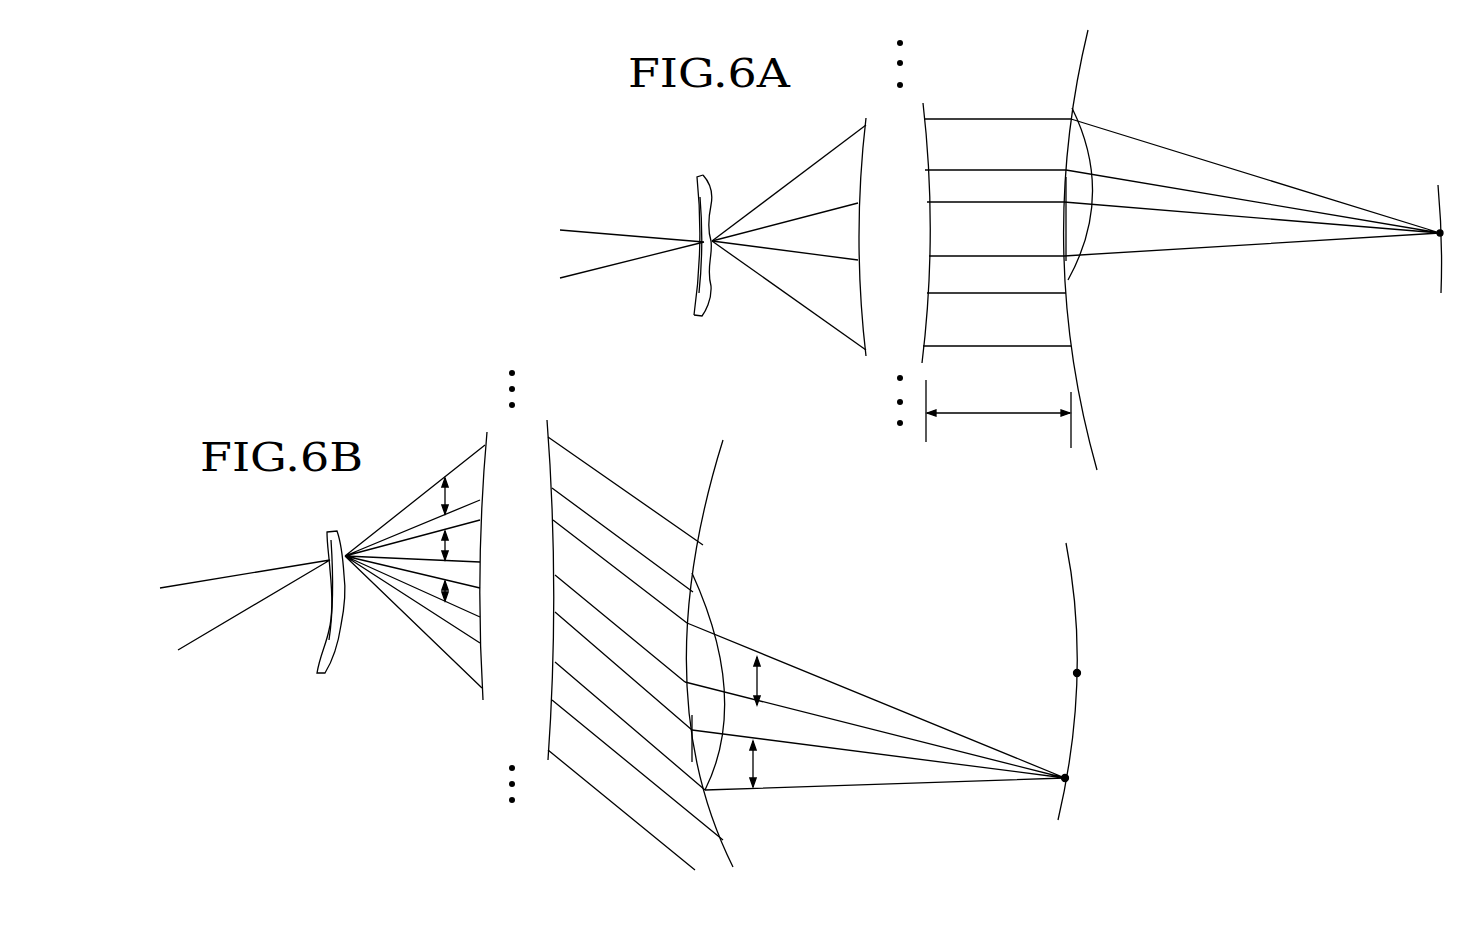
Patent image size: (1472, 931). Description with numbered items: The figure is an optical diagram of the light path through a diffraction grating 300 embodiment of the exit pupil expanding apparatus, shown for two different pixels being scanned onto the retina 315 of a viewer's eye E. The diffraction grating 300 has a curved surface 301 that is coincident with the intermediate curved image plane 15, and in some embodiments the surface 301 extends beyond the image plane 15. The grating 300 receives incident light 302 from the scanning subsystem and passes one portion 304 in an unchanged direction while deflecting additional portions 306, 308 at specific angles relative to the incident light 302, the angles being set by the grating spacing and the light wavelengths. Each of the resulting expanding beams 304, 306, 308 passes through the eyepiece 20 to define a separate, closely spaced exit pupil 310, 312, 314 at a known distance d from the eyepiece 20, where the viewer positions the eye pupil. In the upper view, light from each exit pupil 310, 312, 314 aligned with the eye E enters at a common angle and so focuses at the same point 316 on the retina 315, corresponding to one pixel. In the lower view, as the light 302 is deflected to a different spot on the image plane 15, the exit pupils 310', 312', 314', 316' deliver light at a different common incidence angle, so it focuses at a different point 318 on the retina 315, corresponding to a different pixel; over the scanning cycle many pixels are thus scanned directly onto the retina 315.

In FIG. 6A, the intermediate curved image plane 15 is at (698, 212).
In FIG. 6B, the intermediate curved image plane 15 is at (331, 615).
In FIG. 6A, the eyepiece 20 is at (924, 108).
In FIG. 6B, the eyepiece 20 is at (548, 431).
In FIG. 6A, the diffraction grating 300 is at (714, 181).
In FIG. 6B, the diffraction grating 300 is at (334, 531).
In FIG. 6A, the curved surface 301 is at (697, 305).
In FIG. 6A, the incident light 302 is at (603, 264).
In FIG. 6B, the incident light 302 is at (228, 616).
In FIG. 6A, the passed portion of light 304 is at (820, 214).
In FIG. 6A, the deflected light portion 306 is at (855, 184).
In FIG. 6A, the deflected light portion 308 is at (853, 311).
In FIG. 6A, the exit pupil 310 is at (995, 229).
In FIG. 6A, the exit pupil 312 is at (997, 144).
In FIG. 6A, the exit pupil 314 is at (997, 319).
In FIG. 6A, the retina 315 is at (1427, 261).
In FIG. 6B, the retina 315 is at (1050, 605).
In FIG. 6A, the focal point on retina 316 is at (1253, 187).
In FIG. 6B, the focal point on retina 316 is at (1041, 671).
In FIG. 6B, the focal point on retina 318 is at (1069, 778).
In FIG. 6B, the exit pupil 310' is at (630, 701).
In FIG. 6B, the exit pupil 312' is at (620, 601).
In FIG. 6B, the lower oblique beam 314' is at (635, 785).
In FIG. 6B, the top oblique beam 316' is at (625, 514).
In FIG. 6A, the eye E is at (1077, 76).
In FIG. 6B, the eye E is at (715, 475).
In FIG. 6A, the distance d is at (998, 414).